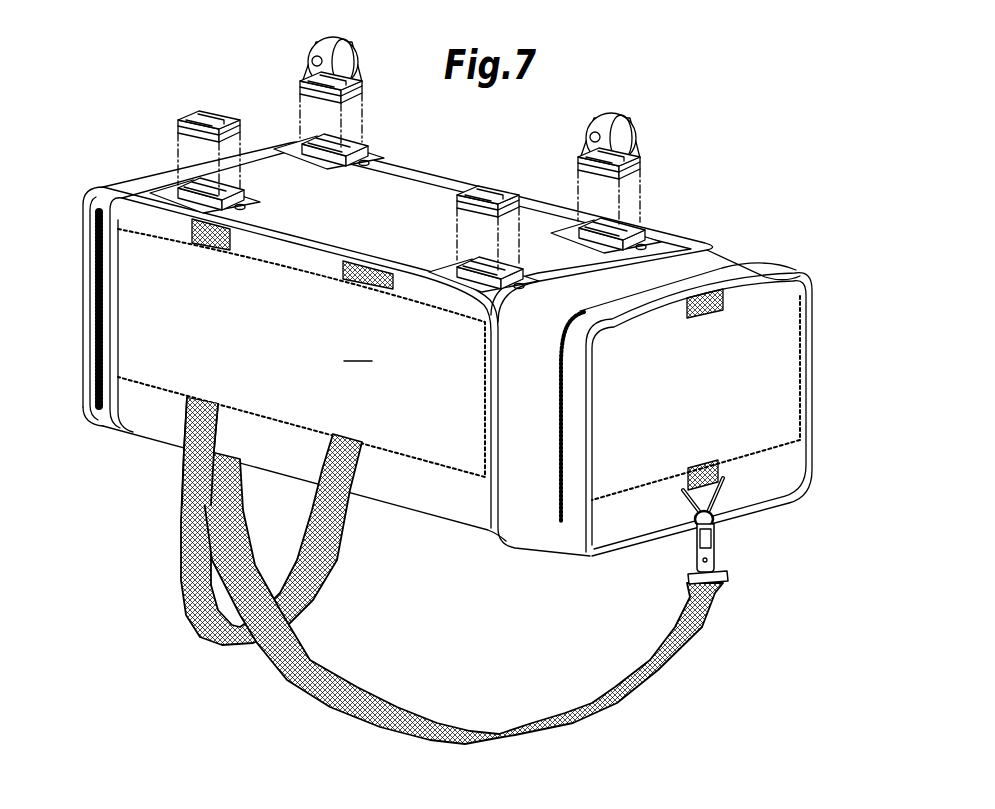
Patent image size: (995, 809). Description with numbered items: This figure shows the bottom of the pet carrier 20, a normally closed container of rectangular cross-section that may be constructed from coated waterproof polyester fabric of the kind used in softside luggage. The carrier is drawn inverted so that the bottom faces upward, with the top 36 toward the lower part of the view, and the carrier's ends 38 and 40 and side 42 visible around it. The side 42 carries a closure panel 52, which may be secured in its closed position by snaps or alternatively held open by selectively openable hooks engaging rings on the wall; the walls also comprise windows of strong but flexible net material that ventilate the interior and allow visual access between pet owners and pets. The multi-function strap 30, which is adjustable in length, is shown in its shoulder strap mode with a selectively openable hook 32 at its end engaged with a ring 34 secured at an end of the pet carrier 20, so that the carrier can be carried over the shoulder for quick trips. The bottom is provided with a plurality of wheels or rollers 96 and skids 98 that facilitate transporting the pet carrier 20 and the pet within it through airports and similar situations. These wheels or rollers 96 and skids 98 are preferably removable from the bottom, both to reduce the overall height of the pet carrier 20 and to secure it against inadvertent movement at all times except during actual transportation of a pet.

The pet carrier 20 is at (94, 180).
The multi-function strap 30 is at (708, 632).
The selectively openable hook 32 is at (720, 549).
The ring 34 is at (727, 488).
The top 36 is at (455, 527).
The end 38 is at (72, 247).
The end 40 is at (417, 208).
The side 42 is at (149, 326).
The closure panel 52 is at (357, 349).
The wheels or rollers 96 is at (334, 40).
The skids 98 is at (218, 108).